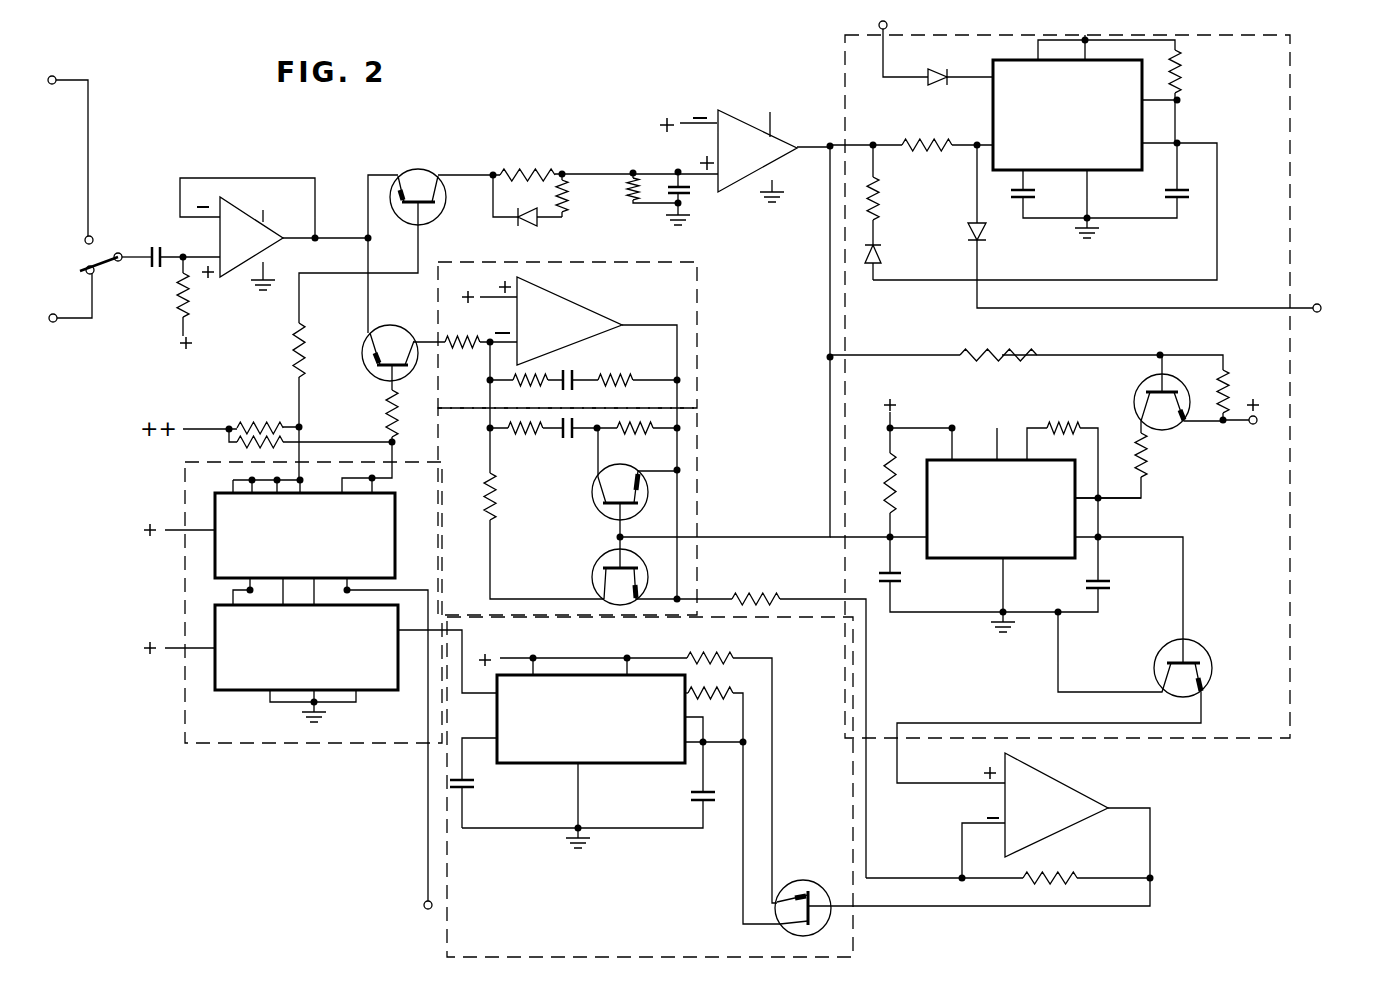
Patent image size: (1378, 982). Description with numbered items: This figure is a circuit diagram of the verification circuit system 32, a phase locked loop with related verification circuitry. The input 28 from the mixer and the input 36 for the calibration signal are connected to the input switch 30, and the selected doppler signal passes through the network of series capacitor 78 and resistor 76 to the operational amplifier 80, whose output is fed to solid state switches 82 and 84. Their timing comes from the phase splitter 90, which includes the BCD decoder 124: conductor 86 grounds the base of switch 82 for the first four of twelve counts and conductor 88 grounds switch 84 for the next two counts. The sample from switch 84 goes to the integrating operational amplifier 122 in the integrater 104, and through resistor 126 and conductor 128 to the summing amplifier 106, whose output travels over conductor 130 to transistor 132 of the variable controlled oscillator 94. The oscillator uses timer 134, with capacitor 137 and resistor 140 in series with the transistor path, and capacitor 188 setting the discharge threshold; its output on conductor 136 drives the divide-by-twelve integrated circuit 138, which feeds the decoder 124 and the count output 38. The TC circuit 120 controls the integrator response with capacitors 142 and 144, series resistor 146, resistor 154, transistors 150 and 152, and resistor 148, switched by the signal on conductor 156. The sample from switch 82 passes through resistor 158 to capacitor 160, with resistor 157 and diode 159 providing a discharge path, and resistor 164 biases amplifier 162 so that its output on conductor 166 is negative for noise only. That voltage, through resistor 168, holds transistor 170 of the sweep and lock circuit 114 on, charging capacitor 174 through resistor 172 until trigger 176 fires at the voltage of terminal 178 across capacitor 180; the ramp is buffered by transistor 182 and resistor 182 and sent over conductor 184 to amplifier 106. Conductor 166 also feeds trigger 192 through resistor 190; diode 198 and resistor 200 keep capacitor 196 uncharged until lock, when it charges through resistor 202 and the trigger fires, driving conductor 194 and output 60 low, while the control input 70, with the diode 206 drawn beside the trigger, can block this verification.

The input 28 is at (53, 323).
The input switch 30 is at (101, 253).
The verification circuit system 32 is at (553, 102).
The input 36 is at (55, 85).
The count output 38 is at (425, 902).
The output 60 is at (879, 26).
The control input 70 is at (1317, 303).
The resistor 76 is at (192, 305).
The series capacitor 78 is at (153, 275).
The operational amplifier 80 is at (232, 207).
The solid state switch 82 is at (414, 172).
The solid state switch 84 is at (439, 314).
The conductor 86 is at (297, 402).
The conductor 88 is at (388, 418).
The phase splitter 90 is at (262, 728).
The variable controlled oscillator 94 is at (636, 899).
The integrater 104 is at (697, 343).
The summing amplifier 106 is at (1027, 780).
The sweep and lock circuit 114 is at (1268, 448).
The TC circuit 120 is at (690, 495).
The integrating operational amplifier 122 is at (585, 312).
The BCD decoder 124 is at (222, 549).
The resistor 126 is at (778, 598).
The conductor 128 is at (372, 678).
The conductor 130 is at (983, 900).
The transistor 132 is at (822, 897).
The integrated circuit timer 134 is at (630, 752).
The conductor 136 is at (457, 688).
The capacitor 137 is at (730, 800).
The divide-by-12 integrated circuit 138 is at (735, 685).
The resistor 140 is at (733, 657).
The capacitor 142 is at (585, 365).
The capacitor 144 is at (523, 440).
The series resistor 146 is at (625, 432).
The resistor 148 is at (544, 513).
The transistor 150 is at (603, 518).
The transistor 152 is at (598, 580).
The resistor 154 is at (492, 513).
The conductor 156 is at (828, 242).
The resistor 157 is at (566, 188).
The resistor 158 is at (530, 168).
The diode 159 is at (528, 226).
The capacitor 160 is at (698, 194).
The amplifier 162 is at (733, 125).
The resistor 164 is at (630, 188).
The conductor 166 is at (826, 144).
The resistor 168 is at (1022, 350).
The transistor 170 is at (1166, 420).
The resistor 172 is at (1148, 468).
The capacitor 174 is at (1113, 583).
The trigger 176 is at (953, 550).
The terminal 178 is at (927, 545).
The capacitor 180 is at (878, 590).
The buffer transistor 182 is at (1062, 422).
The conductor 184 is at (947, 724).
The capacitor 188 is at (478, 782).
The resistor 190 is at (944, 140).
The trigger 192 is at (1128, 131).
The conductor 194 is at (965, 76).
The capacitor 196 is at (1193, 194).
The diode 198 is at (866, 258).
The resistor 200 is at (886, 192).
The resistor 202 is at (1183, 83).
The diode 206 is at (988, 230).